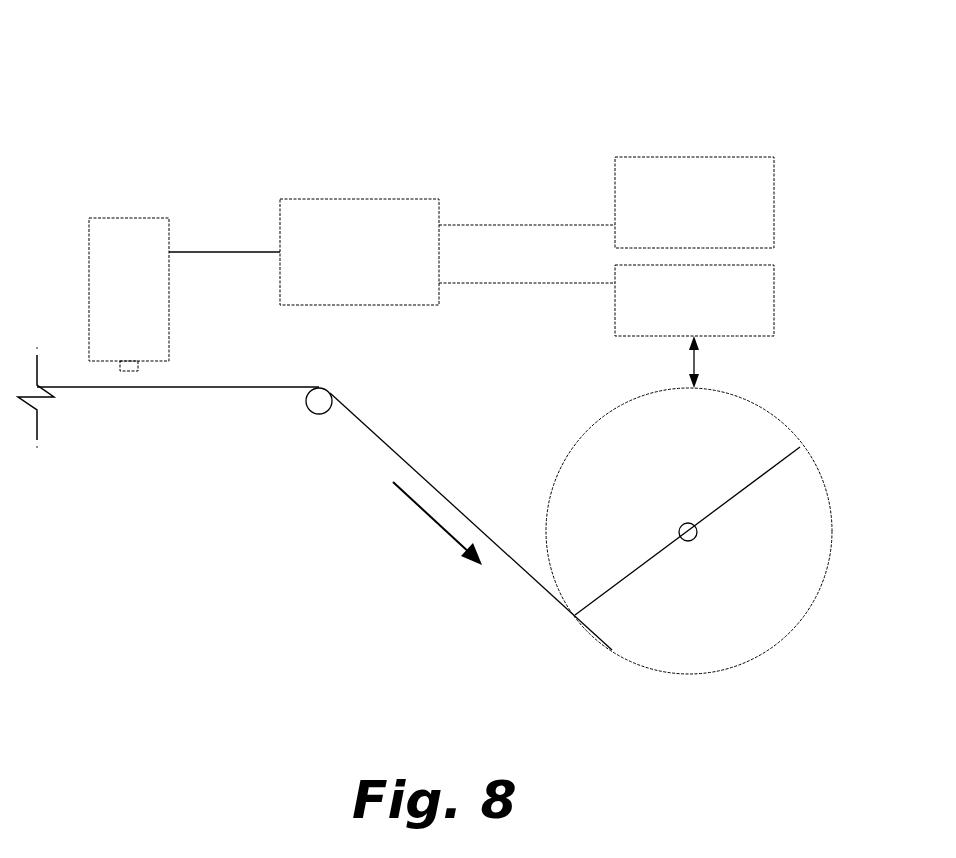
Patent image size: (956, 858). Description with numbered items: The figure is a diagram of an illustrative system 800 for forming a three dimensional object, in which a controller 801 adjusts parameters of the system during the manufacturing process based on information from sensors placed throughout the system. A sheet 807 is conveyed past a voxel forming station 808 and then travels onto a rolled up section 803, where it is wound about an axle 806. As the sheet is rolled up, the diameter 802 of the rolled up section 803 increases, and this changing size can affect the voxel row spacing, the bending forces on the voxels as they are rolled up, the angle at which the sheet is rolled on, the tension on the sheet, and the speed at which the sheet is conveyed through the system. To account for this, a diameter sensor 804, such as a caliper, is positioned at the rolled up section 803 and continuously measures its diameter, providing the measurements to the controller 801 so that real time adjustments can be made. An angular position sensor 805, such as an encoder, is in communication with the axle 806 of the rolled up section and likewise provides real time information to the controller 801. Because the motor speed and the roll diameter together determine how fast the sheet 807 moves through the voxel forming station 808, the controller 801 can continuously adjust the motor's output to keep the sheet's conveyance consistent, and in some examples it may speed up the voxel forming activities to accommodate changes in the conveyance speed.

The system 800 is at (113, 60).
The controller 801 is at (327, 218).
The diameter 802 is at (731, 486).
The rolled up section 803 is at (817, 406).
The diameter sensor 804 is at (772, 293).
The angular position sensor 805 is at (637, 171).
The axle 806 is at (682, 527).
The sheet 807 is at (234, 387).
The voxel forming station 808 is at (67, 343).